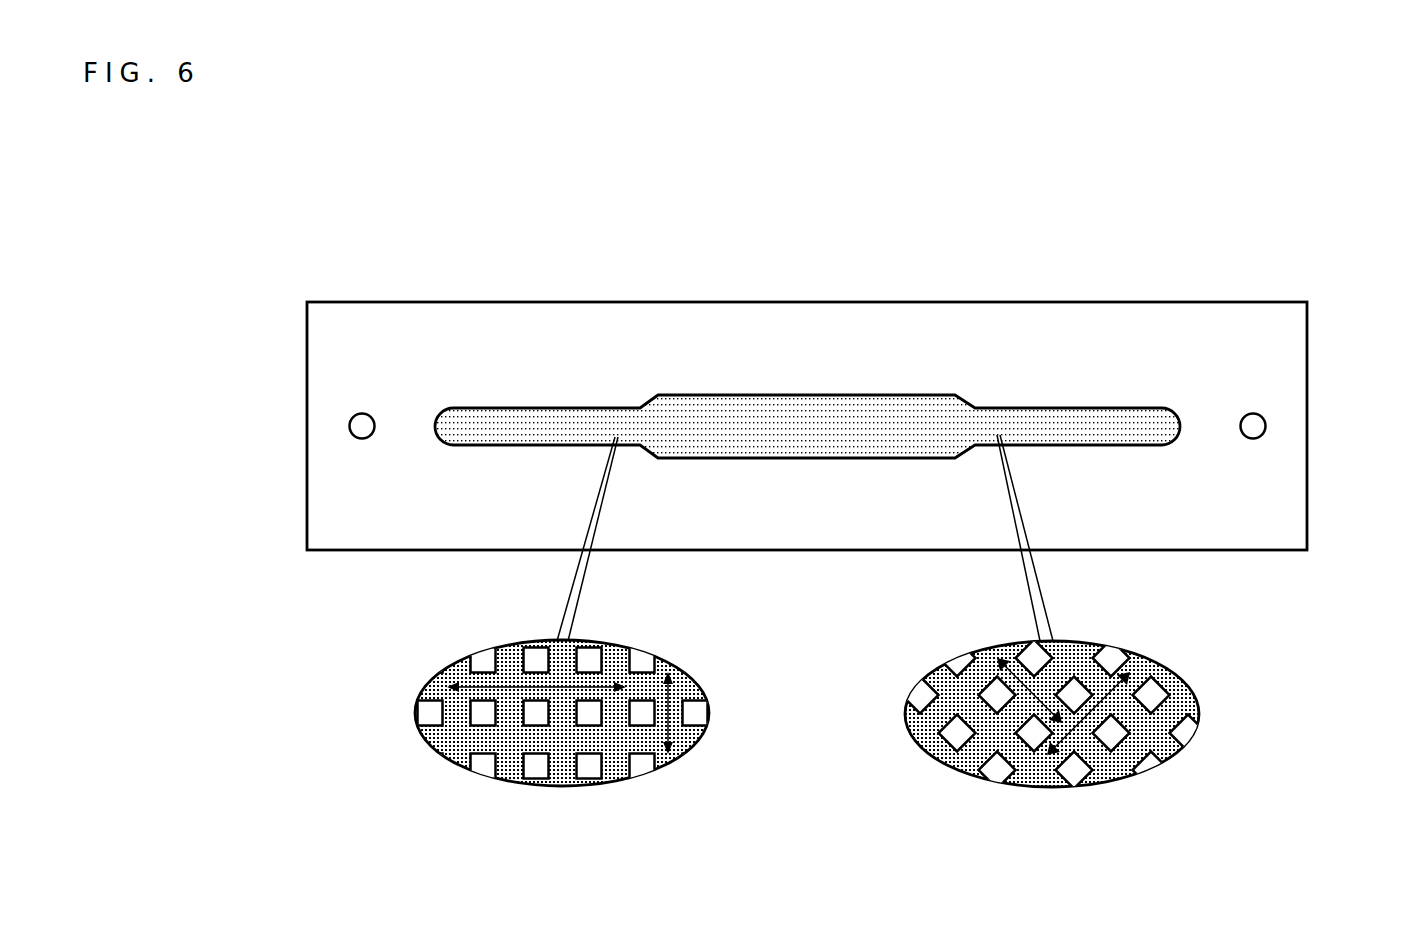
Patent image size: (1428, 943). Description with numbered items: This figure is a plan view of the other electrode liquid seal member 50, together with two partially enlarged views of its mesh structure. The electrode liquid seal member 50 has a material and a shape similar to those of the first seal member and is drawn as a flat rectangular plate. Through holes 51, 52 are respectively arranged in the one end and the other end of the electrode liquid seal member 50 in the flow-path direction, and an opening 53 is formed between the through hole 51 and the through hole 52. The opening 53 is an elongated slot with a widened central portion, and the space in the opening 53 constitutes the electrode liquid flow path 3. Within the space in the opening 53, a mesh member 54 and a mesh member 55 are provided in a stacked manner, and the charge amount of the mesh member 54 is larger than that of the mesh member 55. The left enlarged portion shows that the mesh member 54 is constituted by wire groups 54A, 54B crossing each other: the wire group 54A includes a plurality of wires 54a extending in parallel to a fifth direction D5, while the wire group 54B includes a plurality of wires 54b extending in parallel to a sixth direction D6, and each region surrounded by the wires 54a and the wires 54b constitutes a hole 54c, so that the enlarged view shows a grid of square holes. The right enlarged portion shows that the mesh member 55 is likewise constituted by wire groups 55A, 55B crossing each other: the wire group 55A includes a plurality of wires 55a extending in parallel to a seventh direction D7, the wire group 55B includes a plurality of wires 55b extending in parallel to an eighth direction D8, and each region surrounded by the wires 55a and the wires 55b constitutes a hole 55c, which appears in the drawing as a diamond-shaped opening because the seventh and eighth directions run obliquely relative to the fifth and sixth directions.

The electrode liquid seal member 50 is at (1377, 207).
The through hole 51 is at (362, 417).
The through hole 52 is at (1253, 414).
The electrode liquid flow path 3 is at (713, 419).
The opening 53 is at (937, 397).
The mesh member 54 is at (1069, 418).
The mesh member 55 is at (1013, 437).
The wire 54a is at (433, 688).
The wire 54b is at (510, 780).
The hole 54c is at (480, 658).
The wire group 54A is at (332, 660).
The wire group 54B is at (635, 866).
The wire 55a is at (935, 715).
The wire 55b is at (1017, 750).
The hole 55c is at (960, 665).
The wire group 55A is at (978, 866).
The wire group 55B is at (1225, 866).
The fifth direction D5 is at (527, 686).
The sixth direction D6 is at (682, 713).
The seventh direction D7 is at (1093, 695).
The eighth direction D8 is at (1013, 685).